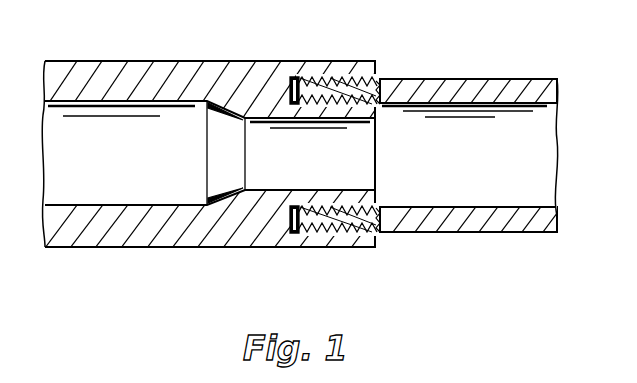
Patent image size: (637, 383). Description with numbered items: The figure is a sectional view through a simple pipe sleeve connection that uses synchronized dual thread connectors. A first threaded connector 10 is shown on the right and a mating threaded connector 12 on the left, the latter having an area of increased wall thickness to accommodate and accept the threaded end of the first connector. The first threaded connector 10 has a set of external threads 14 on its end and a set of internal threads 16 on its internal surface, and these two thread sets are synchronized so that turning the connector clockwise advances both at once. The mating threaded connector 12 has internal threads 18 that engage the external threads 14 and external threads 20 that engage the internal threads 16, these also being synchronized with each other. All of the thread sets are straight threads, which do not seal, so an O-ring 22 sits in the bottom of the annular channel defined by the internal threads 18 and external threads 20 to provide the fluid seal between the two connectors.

The first threaded connector 10 is at (485, 85).
The mating threaded connector 12 is at (113, 80).
The external threads 14 is at (362, 78).
The internal threads 16 is at (380, 203).
The internal threads 18 is at (311, 75).
The external threads 20 is at (345, 248).
The O-ring 22 is at (300, 234).